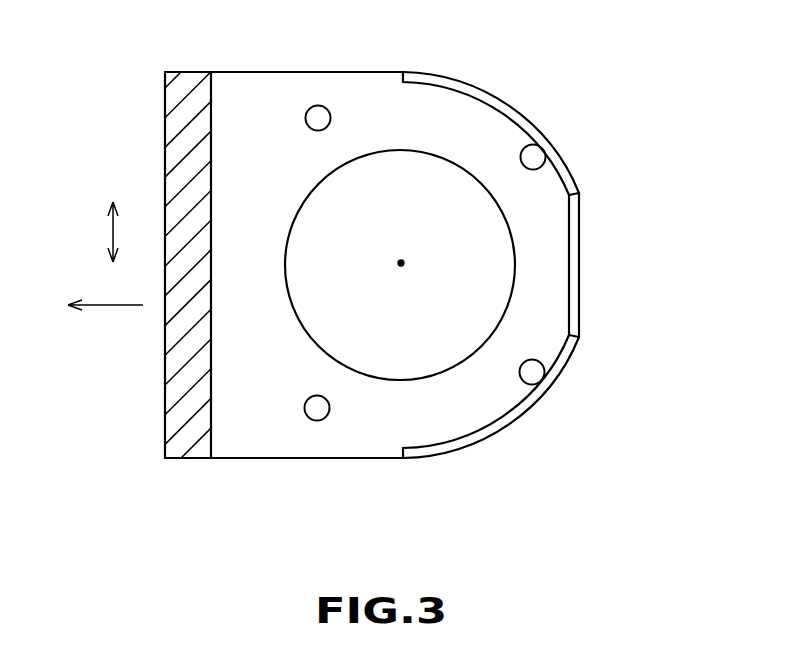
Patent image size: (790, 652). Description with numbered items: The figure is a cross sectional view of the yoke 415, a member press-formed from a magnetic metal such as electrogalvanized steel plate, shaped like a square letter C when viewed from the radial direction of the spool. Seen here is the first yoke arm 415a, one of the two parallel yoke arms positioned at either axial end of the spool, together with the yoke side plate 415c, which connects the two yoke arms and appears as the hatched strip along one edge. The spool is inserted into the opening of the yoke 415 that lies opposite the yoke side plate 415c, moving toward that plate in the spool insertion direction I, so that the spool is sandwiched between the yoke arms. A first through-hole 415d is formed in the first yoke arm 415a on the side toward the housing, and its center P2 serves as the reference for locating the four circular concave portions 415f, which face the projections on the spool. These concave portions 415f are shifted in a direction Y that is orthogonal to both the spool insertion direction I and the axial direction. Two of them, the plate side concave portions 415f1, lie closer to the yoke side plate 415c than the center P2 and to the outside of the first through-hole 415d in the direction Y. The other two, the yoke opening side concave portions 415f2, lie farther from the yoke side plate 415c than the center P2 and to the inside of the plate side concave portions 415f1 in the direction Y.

The yoke 415 is at (147, 119).
The first yoke arm 415a is at (260, 100).
The yoke side plate 415c is at (178, 420).
The first through-hole 415d is at (355, 159).
The concave portions 415f is at (499, 268).
The plate side concave portions 415f1 is at (318, 118).
The yoke opening side concave portions 415f2 is at (533, 157).
The center of the first through-hole P2 is at (399, 270).
The direction Y is at (113, 232).
The spool insertion direction I is at (108, 307).